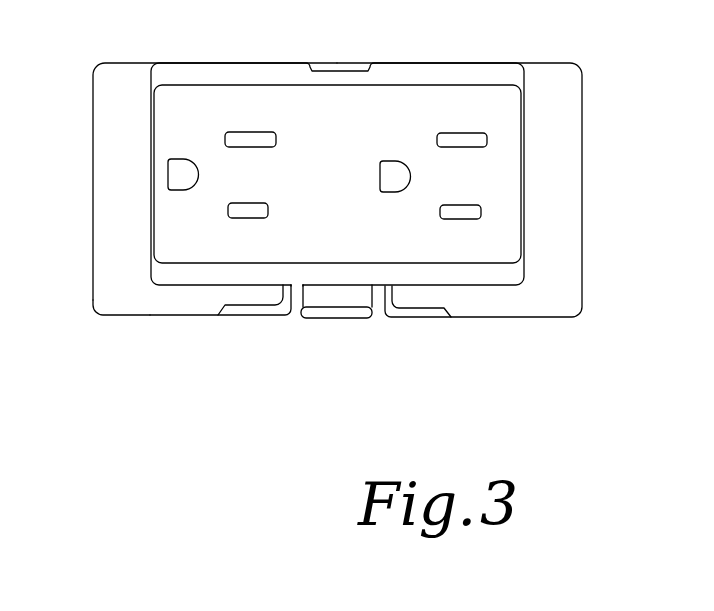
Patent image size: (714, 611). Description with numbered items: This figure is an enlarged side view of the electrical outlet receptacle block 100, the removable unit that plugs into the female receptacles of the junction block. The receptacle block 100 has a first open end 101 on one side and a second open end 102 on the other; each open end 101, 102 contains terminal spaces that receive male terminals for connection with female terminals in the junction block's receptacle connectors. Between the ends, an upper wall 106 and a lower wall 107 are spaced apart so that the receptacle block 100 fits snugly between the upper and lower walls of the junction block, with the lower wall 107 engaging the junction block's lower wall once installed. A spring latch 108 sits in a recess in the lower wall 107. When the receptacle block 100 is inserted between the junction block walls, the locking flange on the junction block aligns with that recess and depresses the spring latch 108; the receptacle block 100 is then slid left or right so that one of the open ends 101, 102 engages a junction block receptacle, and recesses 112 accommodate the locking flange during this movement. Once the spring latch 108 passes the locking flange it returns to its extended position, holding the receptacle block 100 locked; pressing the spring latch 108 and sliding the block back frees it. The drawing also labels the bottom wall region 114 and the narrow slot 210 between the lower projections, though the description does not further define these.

The electrical outlet receptacle block 100 is at (434, 54).
The first open end 101 is at (93, 203).
The second open end 102 is at (582, 215).
The upper wall 106 is at (260, 62).
The lower wall 107 is at (192, 318).
The spring latch 108 is at (348, 320).
The recesses 112 is at (257, 319).
The housing bottom flange 114 is at (130, 297).
The slot 210 is at (300, 318).